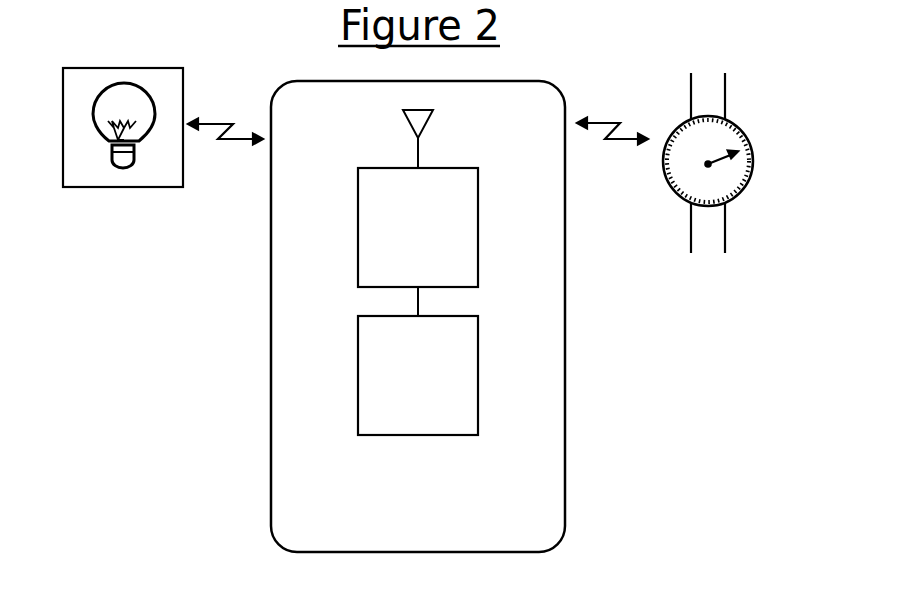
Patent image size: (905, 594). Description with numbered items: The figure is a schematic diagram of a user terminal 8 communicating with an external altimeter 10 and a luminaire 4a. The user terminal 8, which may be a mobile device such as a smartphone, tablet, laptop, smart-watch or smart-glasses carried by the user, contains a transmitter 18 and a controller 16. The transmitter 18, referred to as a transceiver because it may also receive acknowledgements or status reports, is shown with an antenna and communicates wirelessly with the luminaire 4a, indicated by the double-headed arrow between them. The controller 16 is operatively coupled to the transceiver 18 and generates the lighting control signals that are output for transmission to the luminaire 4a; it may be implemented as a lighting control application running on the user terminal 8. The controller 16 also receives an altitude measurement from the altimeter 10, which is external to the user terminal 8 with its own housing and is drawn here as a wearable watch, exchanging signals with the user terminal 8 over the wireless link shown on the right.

The ceiling mounted luminaire 4a is at (155, 187).
The user terminal 8 is at (566, 478).
The altimeter 10 is at (750, 138).
The controller 16 is at (478, 400).
The transmitter 18 is at (478, 253).